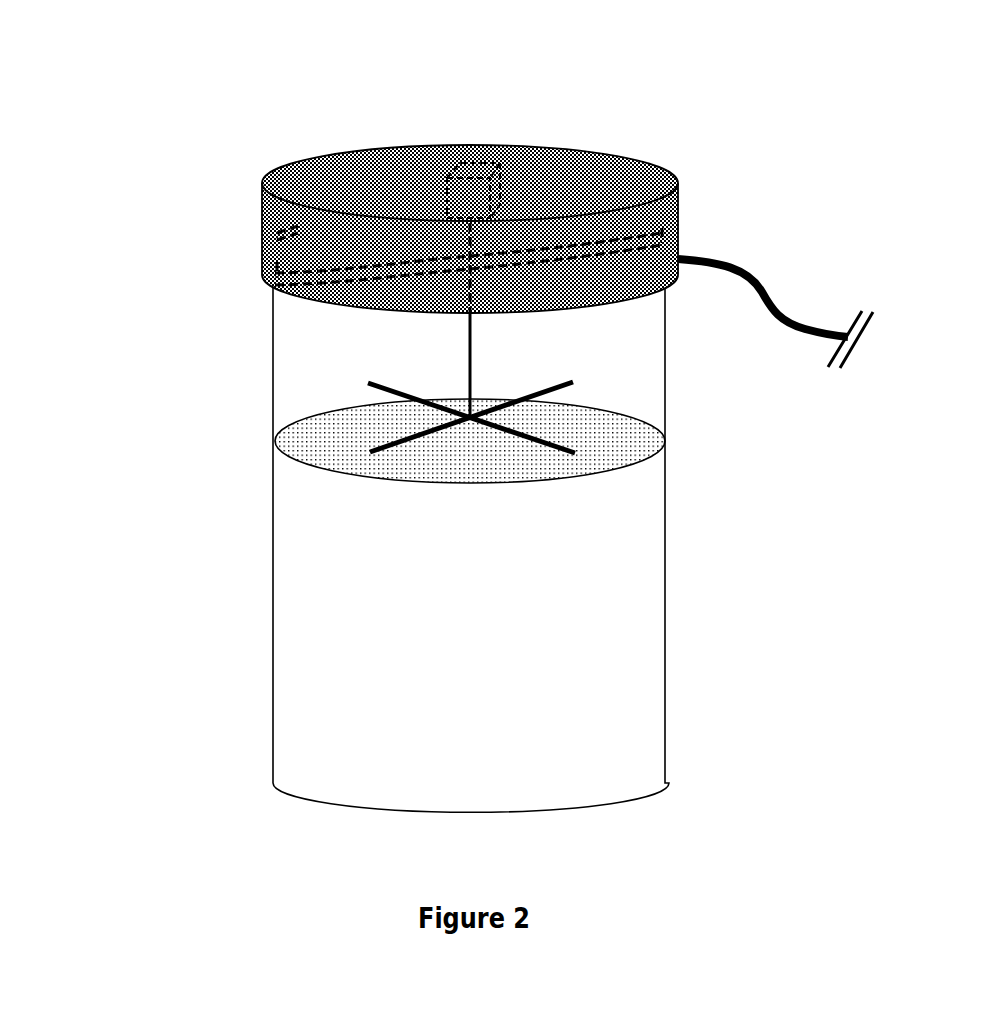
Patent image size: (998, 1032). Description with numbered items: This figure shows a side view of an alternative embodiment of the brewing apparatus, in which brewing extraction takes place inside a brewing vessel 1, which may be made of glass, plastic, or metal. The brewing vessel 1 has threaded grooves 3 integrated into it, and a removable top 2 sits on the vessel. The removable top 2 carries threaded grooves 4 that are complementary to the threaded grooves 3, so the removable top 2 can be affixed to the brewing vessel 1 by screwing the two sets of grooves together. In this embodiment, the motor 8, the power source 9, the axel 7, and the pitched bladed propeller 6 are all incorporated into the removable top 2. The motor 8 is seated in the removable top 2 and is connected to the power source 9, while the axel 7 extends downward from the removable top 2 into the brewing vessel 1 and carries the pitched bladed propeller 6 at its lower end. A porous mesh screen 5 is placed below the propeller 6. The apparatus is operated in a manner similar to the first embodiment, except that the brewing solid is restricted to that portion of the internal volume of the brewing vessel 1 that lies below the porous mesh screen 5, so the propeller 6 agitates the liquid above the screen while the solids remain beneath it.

The brewing vessel 1 is at (273, 655).
The removable top 2 is at (533, 147).
The threaded grooves 3 is at (353, 267).
The threaded grooves 4 is at (350, 285).
The porous mesh screen 5 is at (308, 442).
The pitched bladed propeller 6 is at (575, 453).
The axel 7 is at (472, 360).
The motor 8 is at (500, 183).
The power source 9 is at (760, 277).